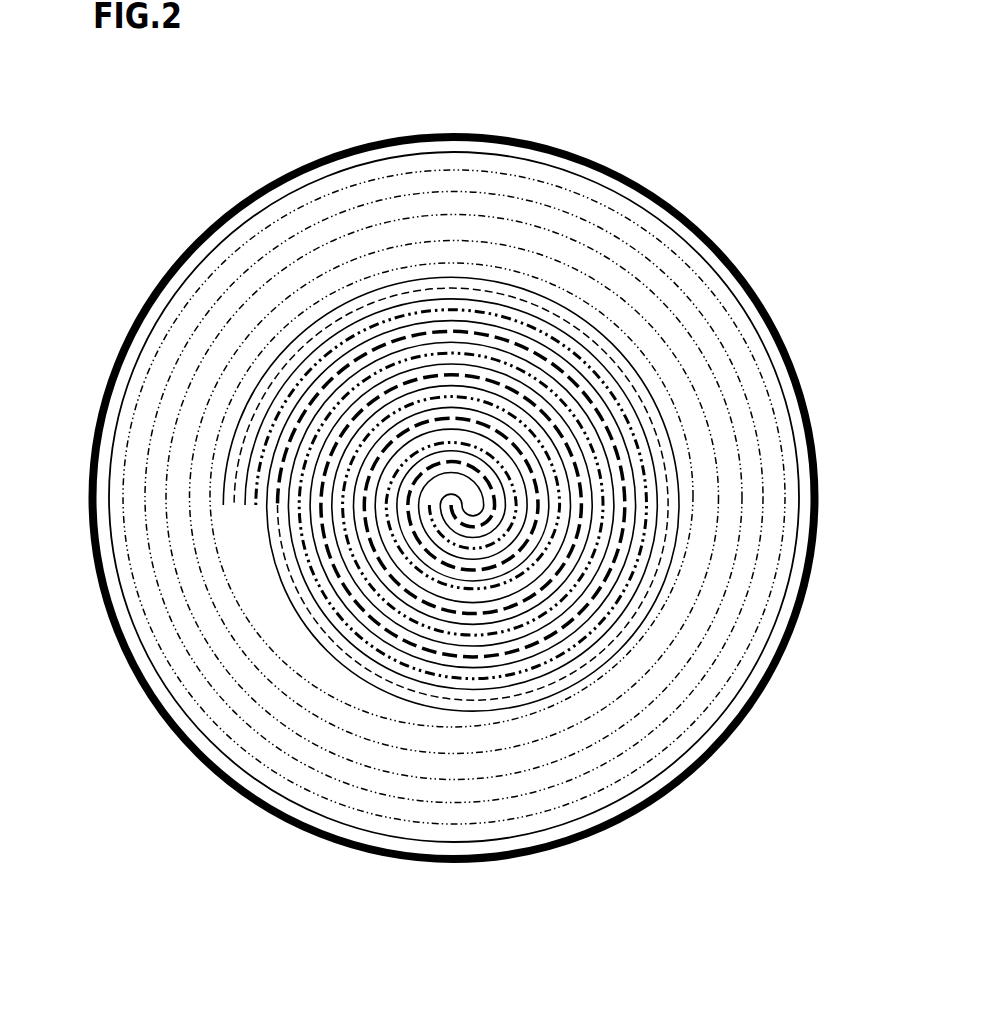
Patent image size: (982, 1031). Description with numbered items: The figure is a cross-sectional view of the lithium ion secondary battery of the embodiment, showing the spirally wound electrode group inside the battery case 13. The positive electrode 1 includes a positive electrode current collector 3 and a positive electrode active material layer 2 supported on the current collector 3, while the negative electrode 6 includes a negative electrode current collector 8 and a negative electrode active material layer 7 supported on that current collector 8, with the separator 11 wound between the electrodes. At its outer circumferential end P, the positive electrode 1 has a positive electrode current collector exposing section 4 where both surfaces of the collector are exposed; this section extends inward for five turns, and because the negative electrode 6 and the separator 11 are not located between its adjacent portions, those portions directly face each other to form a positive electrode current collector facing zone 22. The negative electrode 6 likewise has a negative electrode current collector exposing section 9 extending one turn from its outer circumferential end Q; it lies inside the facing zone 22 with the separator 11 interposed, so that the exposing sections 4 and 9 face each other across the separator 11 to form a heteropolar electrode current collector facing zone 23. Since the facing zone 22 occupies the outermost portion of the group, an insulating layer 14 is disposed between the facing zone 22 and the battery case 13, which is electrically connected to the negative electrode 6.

The positive electrode 1 is at (449, 463).
The positive electrode active material layer 2 is at (247, 300).
The positive electrode current collector 3 is at (297, 205).
The positive electrode current collector exposing section 4 is at (190, 292).
The negative electrode 6 is at (541, 473).
The negative electrode active material layer 7 is at (673, 450).
The negative electrode current collector 8 is at (768, 385).
The negative electrode current collector exposing section 9 is at (625, 413).
The separator 11 is at (410, 278).
The battery case 13 is at (666, 197).
The insulating layer 14 is at (698, 252).
The positive electrode current collector facing zone 22 is at (134, 424).
The heteropolar electrode current collector facing zone 23 is at (213, 473).
The outer circumferential end of the wound positive electrode P is at (120, 485).
The outer circumferential end of the wound negative electrode Q is at (233, 487).